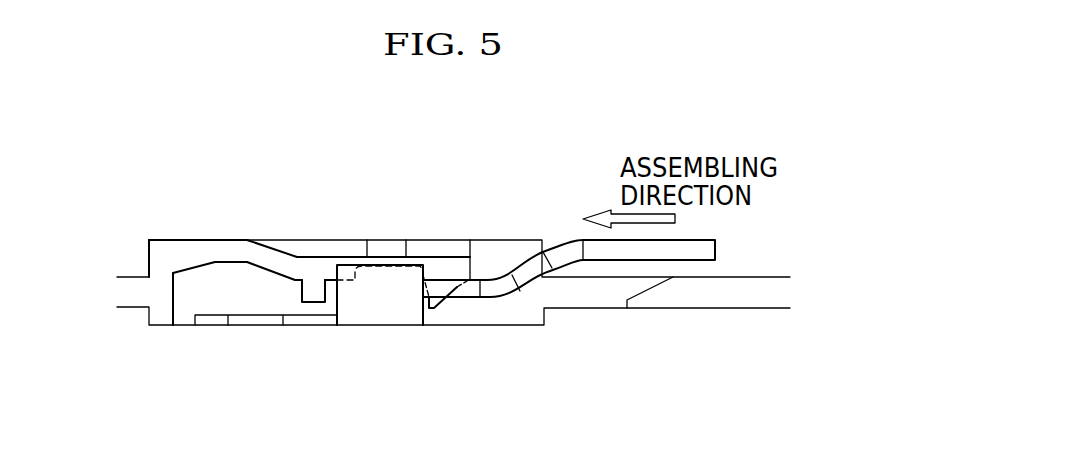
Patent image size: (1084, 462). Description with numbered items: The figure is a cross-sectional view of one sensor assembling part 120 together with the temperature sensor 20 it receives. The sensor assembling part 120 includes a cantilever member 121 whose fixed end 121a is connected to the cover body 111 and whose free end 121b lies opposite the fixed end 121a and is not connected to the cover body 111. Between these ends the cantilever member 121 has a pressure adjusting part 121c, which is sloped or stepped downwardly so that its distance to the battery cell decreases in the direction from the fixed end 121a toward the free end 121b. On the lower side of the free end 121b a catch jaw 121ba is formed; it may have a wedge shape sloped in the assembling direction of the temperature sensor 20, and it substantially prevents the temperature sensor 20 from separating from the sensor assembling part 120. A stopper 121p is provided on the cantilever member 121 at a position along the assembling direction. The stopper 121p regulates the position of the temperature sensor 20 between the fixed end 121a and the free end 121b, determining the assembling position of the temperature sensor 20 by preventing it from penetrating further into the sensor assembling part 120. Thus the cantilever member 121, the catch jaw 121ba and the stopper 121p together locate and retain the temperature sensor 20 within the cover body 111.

The temperature sensor 20 is at (381, 304).
The cover body 111 is at (157, 293).
The sensor assembling part 120 is at (414, 271).
The cantilever member 121 is at (231, 248).
The fixed end 121a is at (159, 240).
The free end 121b is at (463, 257).
The catch jaw 121ba is at (458, 285).
The pressure adjusting part 121c is at (274, 245).
The stopper 121p is at (310, 302).